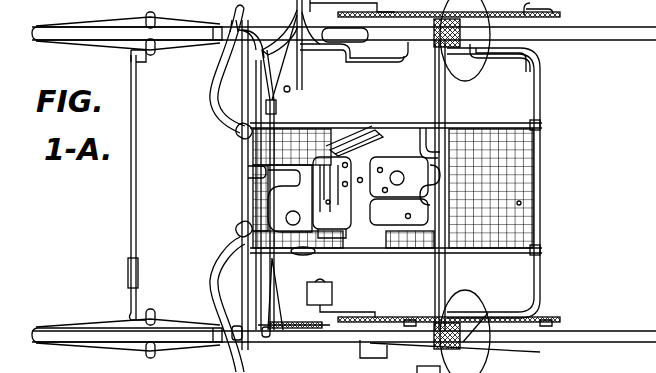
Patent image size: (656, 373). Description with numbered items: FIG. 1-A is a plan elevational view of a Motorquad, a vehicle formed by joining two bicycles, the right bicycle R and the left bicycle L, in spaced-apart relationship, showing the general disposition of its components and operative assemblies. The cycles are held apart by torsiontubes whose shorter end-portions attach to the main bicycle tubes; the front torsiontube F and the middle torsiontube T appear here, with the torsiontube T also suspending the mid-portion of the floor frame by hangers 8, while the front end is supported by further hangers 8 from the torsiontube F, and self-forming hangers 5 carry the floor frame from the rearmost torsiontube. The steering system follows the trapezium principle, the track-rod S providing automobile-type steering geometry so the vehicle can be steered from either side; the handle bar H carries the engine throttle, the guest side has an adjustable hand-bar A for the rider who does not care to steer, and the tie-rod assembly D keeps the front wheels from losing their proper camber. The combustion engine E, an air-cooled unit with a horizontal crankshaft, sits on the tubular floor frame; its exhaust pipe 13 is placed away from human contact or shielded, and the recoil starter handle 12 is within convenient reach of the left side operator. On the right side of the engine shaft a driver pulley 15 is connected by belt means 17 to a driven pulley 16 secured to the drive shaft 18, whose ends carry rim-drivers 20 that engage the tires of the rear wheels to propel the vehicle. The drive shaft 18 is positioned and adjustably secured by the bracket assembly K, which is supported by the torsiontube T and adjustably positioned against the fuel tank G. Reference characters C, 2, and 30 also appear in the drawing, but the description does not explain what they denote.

The right bicycle R is at (53, 43).
The left bicycle L is at (42, 327).
The tie-rod assembly D is at (140, 250).
The handle bar H is at (216, 81).
The front torsiontube F is at (232, 212).
The adjustable hand-bar A is at (305, 71).
The track-rod S is at (264, 72).
The conduit C is at (368, 62).
The bracket assembly K is at (404, 175).
The fuel tank G is at (406, 213).
The combustion engine E is at (328, 255).
The middle torsiontube T is at (419, 297).
The frame member 2 is at (650, 276).
The self-forming hangers 5 is at (541, 250).
The hangers 8 is at (270, 76).
The recoil starter handle 12 is at (306, 256).
The exhaust pipe 13 is at (246, 172).
The driver pulley 15 is at (357, 106).
The driven pulley 16 is at (456, 104).
The belt means 17 is at (410, 108).
The drive shaft 18 is at (446, 277).
The rim-drivers 20 is at (488, 313).
The mesh panel 30 is at (521, 202).